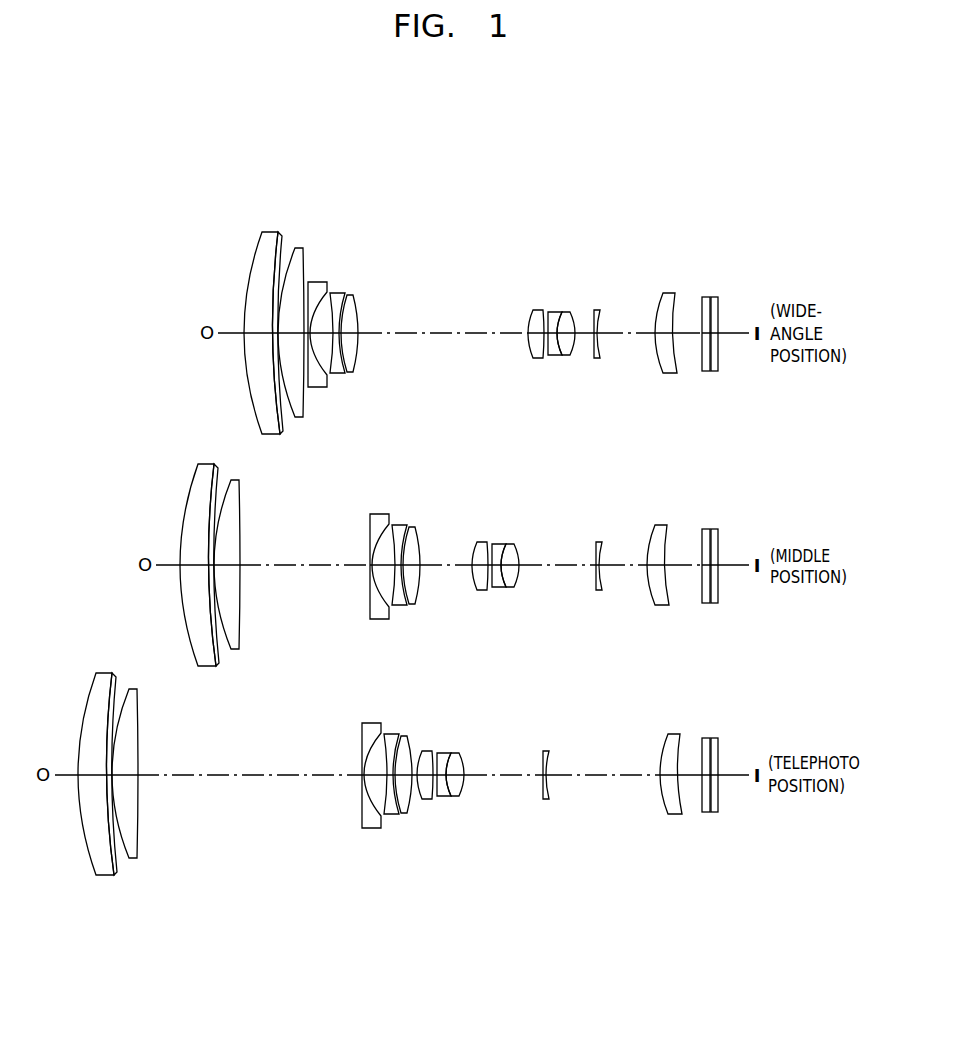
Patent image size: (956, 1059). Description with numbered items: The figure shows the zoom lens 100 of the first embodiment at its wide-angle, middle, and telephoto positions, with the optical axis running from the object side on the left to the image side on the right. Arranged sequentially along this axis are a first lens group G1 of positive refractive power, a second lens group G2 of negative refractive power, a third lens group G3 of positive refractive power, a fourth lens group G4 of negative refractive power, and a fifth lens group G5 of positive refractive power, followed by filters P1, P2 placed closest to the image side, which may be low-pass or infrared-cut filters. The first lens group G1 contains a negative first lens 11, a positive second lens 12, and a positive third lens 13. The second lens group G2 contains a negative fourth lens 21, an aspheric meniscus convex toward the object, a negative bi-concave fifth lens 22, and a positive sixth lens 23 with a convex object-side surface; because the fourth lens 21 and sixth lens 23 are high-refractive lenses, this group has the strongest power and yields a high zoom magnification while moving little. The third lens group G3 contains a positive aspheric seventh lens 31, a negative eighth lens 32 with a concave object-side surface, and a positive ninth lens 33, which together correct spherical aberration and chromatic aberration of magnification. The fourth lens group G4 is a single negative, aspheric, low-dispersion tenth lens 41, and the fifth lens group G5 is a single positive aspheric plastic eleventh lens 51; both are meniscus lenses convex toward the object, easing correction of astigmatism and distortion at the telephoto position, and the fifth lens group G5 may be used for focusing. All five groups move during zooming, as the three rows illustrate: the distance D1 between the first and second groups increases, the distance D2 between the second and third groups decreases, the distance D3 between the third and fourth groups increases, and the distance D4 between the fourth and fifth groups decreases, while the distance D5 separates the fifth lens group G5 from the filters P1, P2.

The zoom lens 100 is at (199, 173).
The first lens group G1 is at (302, 181).
The second lens group G2 is at (305, 181).
The third lens group G3 is at (513, 181).
The fourth lens group G4 is at (583, 181).
The fifth lens group G5 is at (650, 181).
The first lens 11 is at (266, 237).
The second lens 12 is at (280, 240).
The third lens 13 is at (298, 251).
The fourth lens 21 is at (318, 287).
The fifth lens 22 is at (339, 297).
The sixth lens 23 is at (356, 298).
The seventh lens 31 is at (538, 313).
The eighth lens 32 is at (553, 314).
The ninth lens 33 is at (569, 314).
The tenth lens 41 is at (600, 310).
The eleventh lens 51 is at (671, 296).
The filter P1 is at (706, 299).
The filter P2 is at (716, 299).
The distance between first and second lens groups D1 is at (303, 567).
The distance between second and third lens groups D2 is at (445, 567).
The distance between third and fourth lens groups D3 is at (558, 567).
The distance between fourth and fifth lens groups D4 is at (625, 567).
The distance between fifth lens group and filter D5 is at (685, 567).